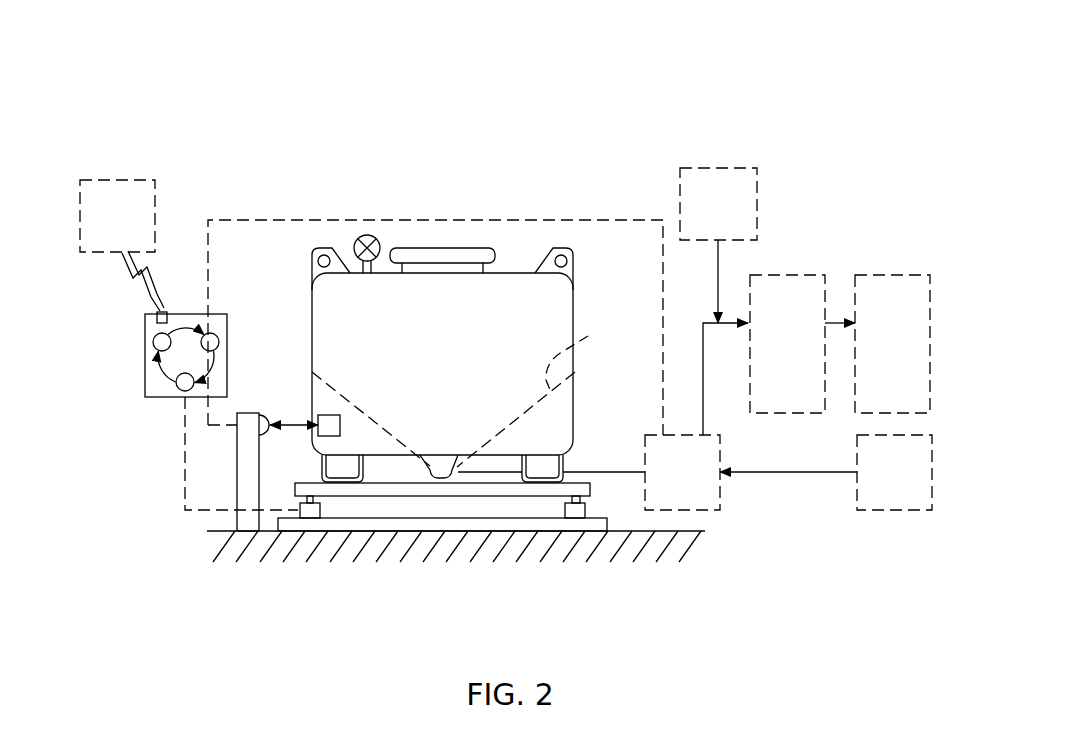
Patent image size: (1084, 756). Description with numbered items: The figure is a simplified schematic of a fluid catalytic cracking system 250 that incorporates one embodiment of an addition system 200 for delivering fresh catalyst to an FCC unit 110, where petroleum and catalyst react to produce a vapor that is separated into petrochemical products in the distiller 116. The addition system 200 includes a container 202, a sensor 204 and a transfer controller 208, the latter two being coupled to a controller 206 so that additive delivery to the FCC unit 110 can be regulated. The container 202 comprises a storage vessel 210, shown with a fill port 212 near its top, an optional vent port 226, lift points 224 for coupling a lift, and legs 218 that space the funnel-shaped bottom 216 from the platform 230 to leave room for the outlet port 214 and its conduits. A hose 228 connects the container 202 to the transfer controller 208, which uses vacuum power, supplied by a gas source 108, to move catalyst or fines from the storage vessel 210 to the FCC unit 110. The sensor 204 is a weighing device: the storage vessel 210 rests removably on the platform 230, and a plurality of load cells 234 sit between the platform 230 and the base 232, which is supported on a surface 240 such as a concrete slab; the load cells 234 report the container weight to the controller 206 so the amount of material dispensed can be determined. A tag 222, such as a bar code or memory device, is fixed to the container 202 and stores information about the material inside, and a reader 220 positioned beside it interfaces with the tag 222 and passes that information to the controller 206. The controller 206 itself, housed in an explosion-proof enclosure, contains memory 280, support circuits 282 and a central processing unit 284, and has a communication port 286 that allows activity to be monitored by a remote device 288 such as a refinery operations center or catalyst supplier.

The fluid catalytic cracking system 250 is at (692, 78).
The addition system 200 is at (525, 192).
The container 202 is at (577, 305).
The sensor 204 is at (342, 492).
The controller 206 is at (143, 360).
The transfer controller 208 is at (699, 209).
The storage vessel 210 is at (424, 320).
The fill port 212 is at (447, 248).
The outlet port 214 is at (420, 485).
The bottom 216 is at (593, 356).
The legs 218 is at (365, 468).
The reader 220 is at (260, 407).
The tag 222 is at (333, 413).
The lift points 224 is at (577, 262).
The vent port 226 is at (367, 235).
The hose 228 is at (607, 472).
The platform 230 is at (503, 492).
The base 232 is at (575, 527).
The load cells 234 is at (580, 508).
The surface 240 is at (628, 531).
The memory 280 is at (217, 335).
The support circuits 282 is at (181, 390).
The central processing unit 284 is at (157, 338).
The communication port 286 is at (170, 315).
The remote device 288 is at (98, 220).
The gas source 108 is at (874, 474).
The FCC unit 110 is at (768, 372).
The distiller 116 is at (874, 372).